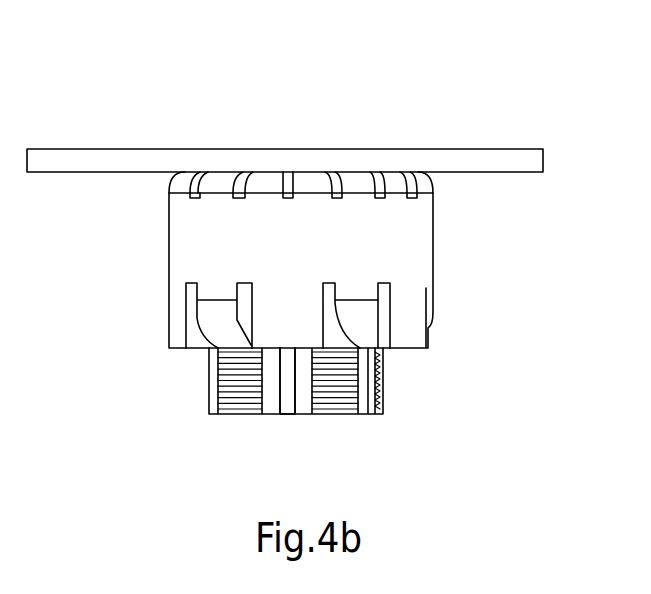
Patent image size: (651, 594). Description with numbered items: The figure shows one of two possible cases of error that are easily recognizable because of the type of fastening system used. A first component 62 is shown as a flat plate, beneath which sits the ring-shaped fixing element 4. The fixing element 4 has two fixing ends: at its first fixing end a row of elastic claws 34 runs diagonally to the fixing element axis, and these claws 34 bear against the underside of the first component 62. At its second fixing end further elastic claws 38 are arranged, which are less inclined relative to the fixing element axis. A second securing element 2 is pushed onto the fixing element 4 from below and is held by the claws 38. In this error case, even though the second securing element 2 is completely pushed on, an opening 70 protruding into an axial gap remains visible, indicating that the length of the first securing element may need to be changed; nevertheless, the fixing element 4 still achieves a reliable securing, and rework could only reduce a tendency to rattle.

The second securing element 2 is at (213, 408).
The fixing element 4 is at (405, 252).
The elastic claws 34 is at (258, 178).
The elastic claws 38 is at (357, 317).
The first component 62 is at (122, 158).
The opening 70 is at (283, 353).